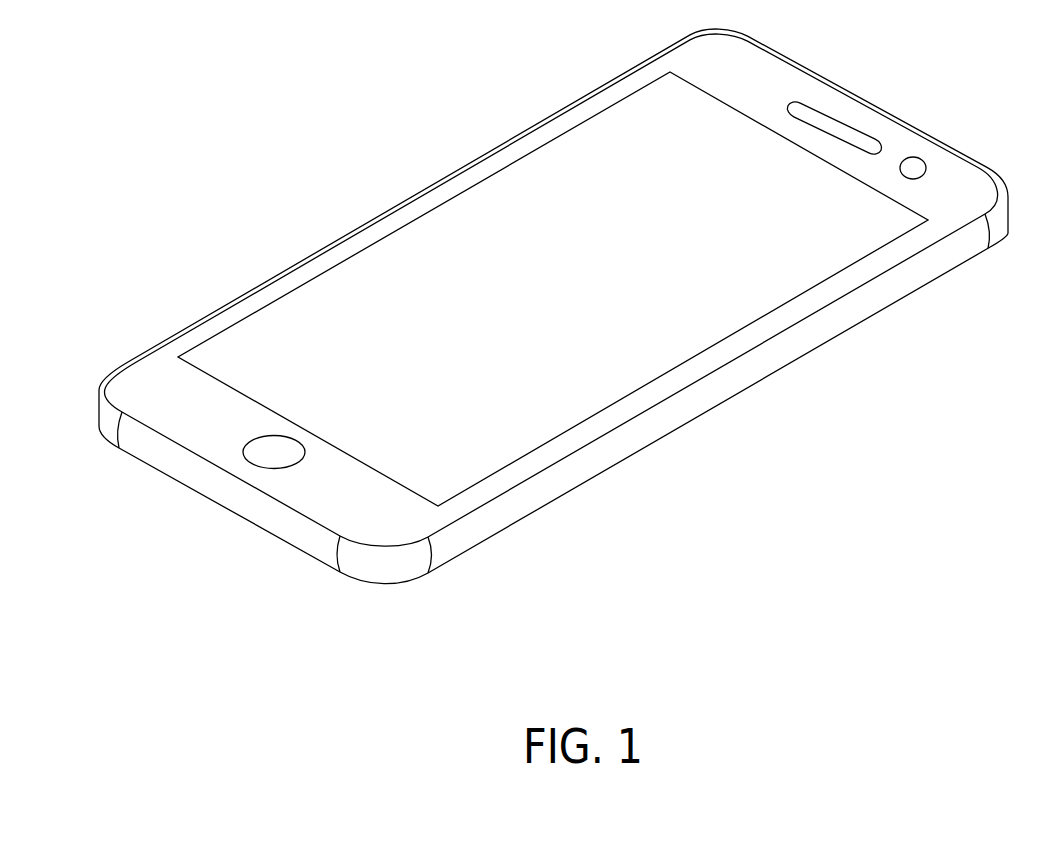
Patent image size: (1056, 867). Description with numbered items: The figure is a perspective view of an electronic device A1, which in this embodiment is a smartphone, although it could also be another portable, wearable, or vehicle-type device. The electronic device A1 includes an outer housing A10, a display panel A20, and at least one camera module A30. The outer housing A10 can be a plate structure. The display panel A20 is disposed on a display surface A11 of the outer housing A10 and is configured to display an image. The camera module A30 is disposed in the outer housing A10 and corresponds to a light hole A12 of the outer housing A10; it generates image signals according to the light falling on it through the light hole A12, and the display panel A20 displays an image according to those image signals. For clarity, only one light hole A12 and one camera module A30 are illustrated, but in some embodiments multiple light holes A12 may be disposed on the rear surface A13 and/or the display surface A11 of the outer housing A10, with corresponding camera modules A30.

The electronic device A1 is at (553, 306).
The outer housing A10 is at (553, 306).
The display surface A11 is at (427, 203).
The light hole A12 is at (922, 115).
The rear surface A13 is at (792, 372).
The display panel A20 is at (320, 300).
The camera module A30 is at (917, 167).